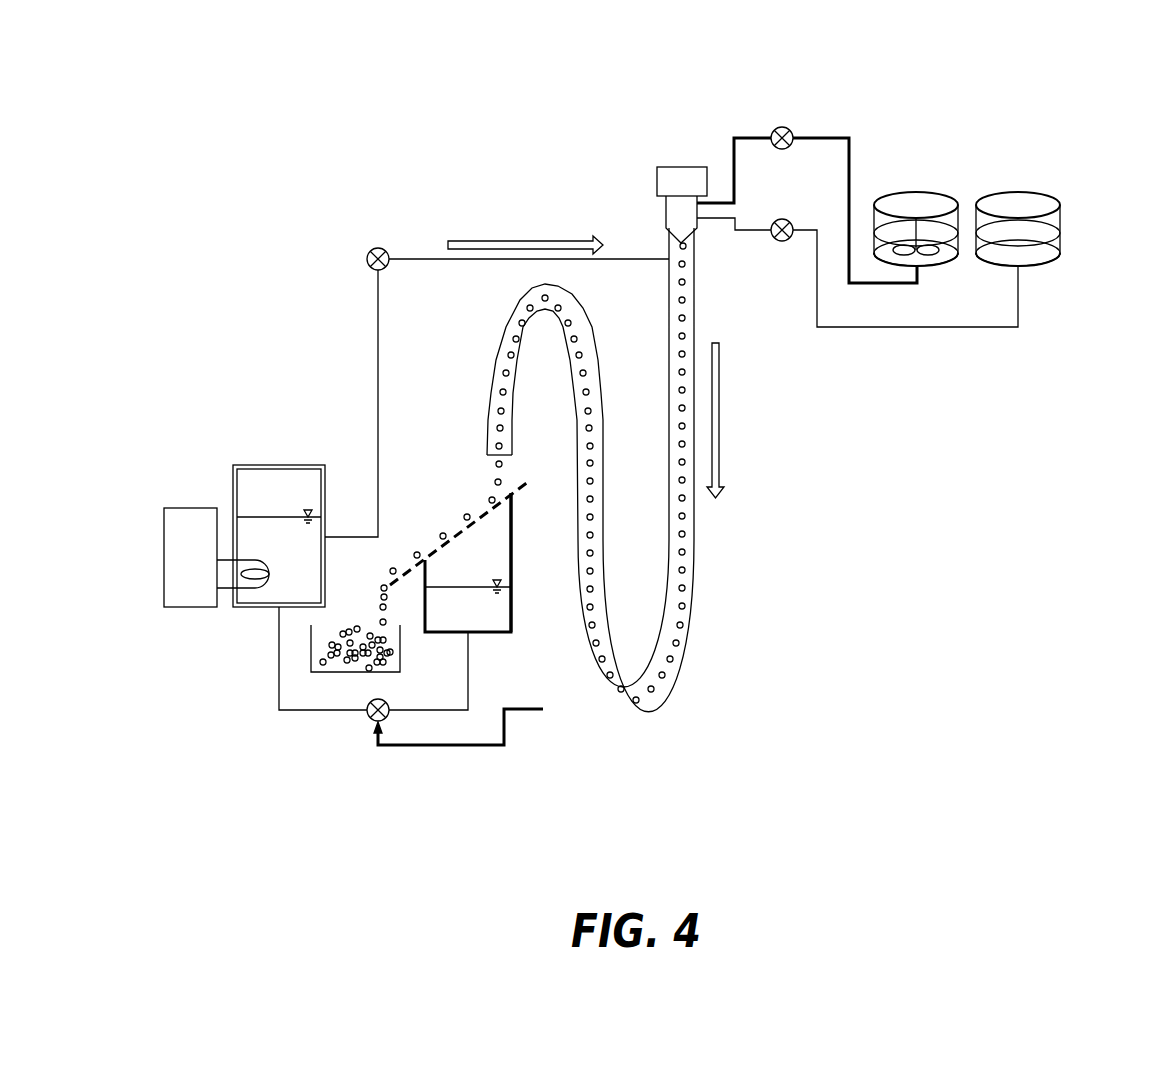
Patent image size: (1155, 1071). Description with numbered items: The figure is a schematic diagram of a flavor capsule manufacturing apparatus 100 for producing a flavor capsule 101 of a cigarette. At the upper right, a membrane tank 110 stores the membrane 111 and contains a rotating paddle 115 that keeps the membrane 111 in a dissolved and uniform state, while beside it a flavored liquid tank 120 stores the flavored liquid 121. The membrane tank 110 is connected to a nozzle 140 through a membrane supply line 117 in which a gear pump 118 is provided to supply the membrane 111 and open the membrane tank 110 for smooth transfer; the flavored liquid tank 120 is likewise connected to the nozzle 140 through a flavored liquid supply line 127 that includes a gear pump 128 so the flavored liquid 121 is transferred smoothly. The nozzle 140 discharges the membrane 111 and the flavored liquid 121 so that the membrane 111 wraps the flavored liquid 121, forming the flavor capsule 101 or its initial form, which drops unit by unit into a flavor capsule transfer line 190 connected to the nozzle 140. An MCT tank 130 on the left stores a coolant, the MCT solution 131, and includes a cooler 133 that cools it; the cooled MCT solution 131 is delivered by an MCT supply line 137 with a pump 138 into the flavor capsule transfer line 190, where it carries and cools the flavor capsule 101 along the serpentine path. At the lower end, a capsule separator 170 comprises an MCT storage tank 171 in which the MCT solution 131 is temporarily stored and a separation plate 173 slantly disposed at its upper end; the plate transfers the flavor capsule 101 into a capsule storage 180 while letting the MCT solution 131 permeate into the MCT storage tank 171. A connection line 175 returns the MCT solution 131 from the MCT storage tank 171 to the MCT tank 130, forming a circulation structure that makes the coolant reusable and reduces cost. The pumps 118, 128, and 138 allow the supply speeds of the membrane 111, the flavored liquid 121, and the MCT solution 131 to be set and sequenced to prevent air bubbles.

The flavor capsule manufacturing apparatus 100 is at (593, 56).
The flavor capsule 101 is at (688, 248).
The membrane tank 110 is at (926, 268).
The membrane 111 is at (952, 236).
The rotating paddle 115 is at (927, 256).
The membrane supply line 117 is at (868, 285).
The gear pump 118 is at (793, 127).
The flavored liquid tank 120 is at (1027, 254).
The flavored liquid 121 is at (1050, 236).
The flavored liquid supply line 127 is at (817, 330).
The gear pump 128 is at (789, 219).
The MCT tank 130 is at (279, 465).
The MCT solution 131 is at (281, 514).
The cooler 133 is at (188, 507).
The MCT supply line 137 is at (377, 300).
The pump 138 is at (371, 251).
The nozzle 140 is at (657, 178).
The capsule separator 170 is at (511, 634).
The MCT storage tank 171 is at (513, 565).
The separation plate 173 is at (522, 487).
The connection line 175 is at (328, 715).
The capsule storage 180 is at (311, 645).
The flavor capsule transfer line 190 is at (697, 540).